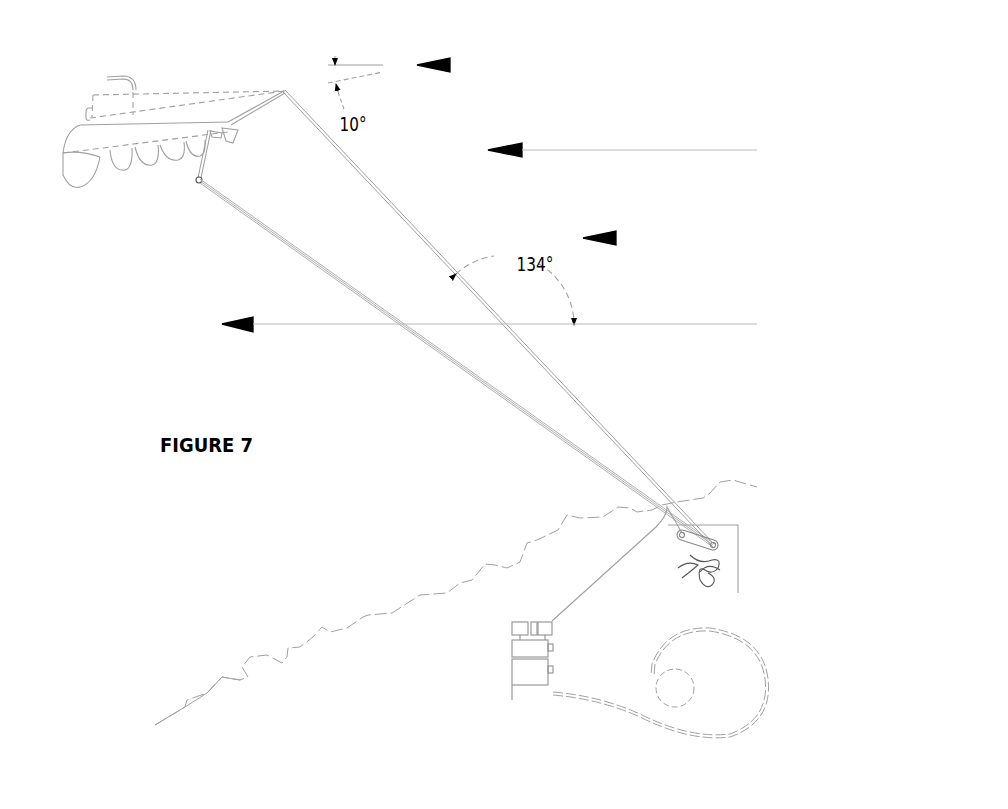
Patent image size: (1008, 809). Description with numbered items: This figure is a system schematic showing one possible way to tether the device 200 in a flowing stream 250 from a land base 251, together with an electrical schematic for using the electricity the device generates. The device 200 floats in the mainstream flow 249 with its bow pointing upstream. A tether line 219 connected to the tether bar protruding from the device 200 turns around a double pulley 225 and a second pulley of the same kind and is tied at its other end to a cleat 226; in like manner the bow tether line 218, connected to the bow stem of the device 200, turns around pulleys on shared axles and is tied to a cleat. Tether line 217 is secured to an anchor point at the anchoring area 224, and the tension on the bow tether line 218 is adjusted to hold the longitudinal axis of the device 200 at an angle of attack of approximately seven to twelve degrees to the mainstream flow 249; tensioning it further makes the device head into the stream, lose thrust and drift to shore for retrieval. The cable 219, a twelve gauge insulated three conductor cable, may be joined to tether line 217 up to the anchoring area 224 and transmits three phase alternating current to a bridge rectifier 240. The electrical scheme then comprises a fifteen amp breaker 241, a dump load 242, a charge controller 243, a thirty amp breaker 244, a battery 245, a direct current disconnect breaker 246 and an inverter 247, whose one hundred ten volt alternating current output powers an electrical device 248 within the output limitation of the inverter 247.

The device 200 is at (238, 55).
The tether line 217 is at (305, 256).
The tether line 218 is at (378, 190).
The tether line 219 is at (242, 213).
The anchoring area 224 is at (688, 557).
The double pulley 225 is at (720, 544).
The cleat 226 is at (727, 587).
The bridge rectifier 240 is at (547, 620).
The 15 amp breaker 241 is at (534, 620).
The dump load 242 is at (510, 628).
The charge controller 243 is at (510, 650).
The 30 amp breaker 244 is at (554, 646).
The battery 245 is at (510, 676).
The direct current disconnect breaker 246 is at (554, 668).
The inverter 247 is at (530, 700).
The electrical device 248 is at (683, 694).
The flow 249 is at (738, 237).
The flowing stream 250 is at (132, 622).
The land base 251 is at (300, 729).